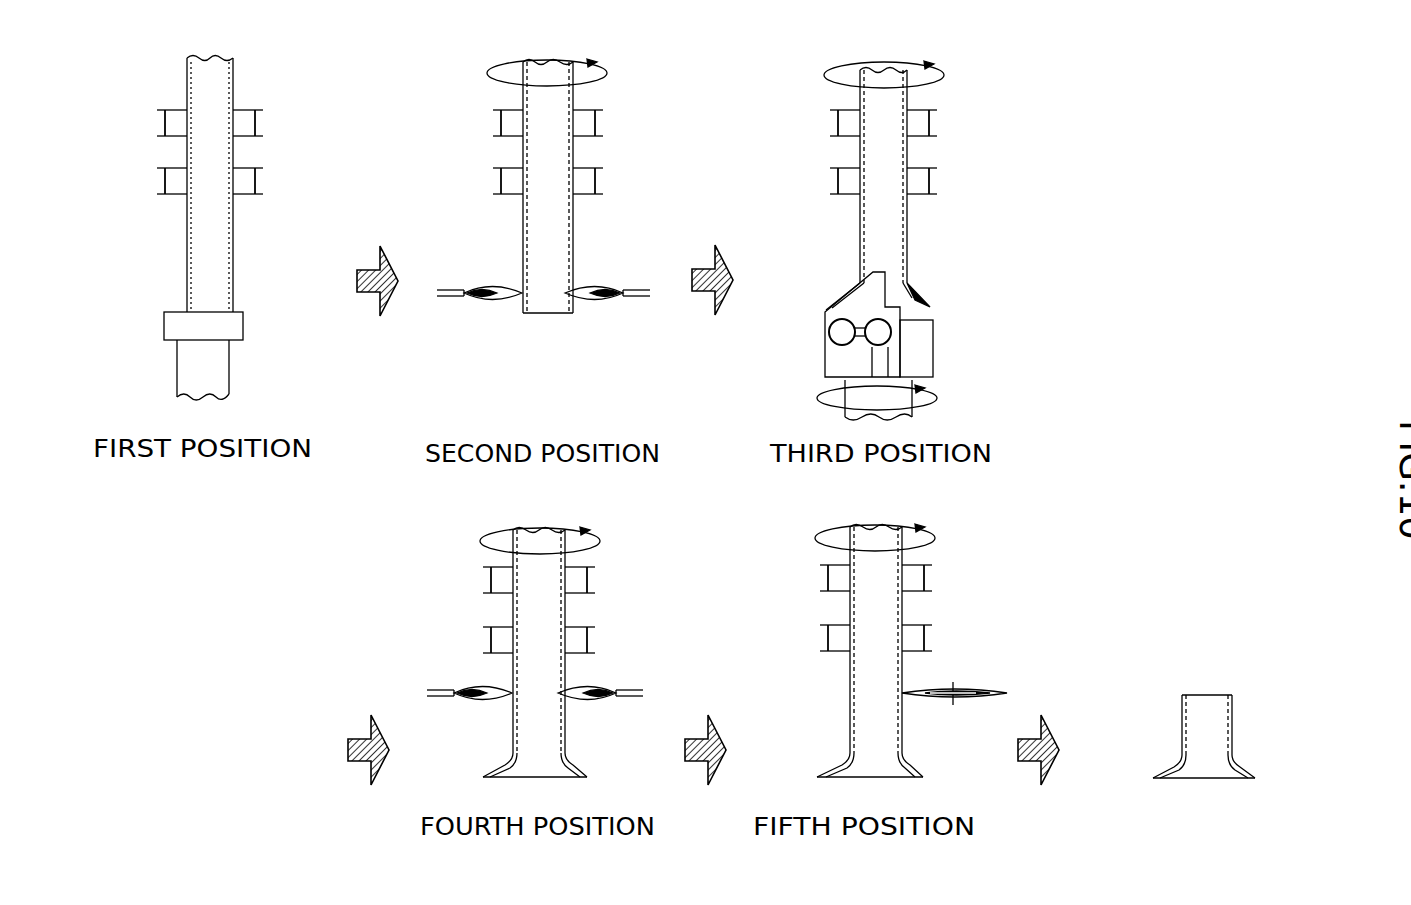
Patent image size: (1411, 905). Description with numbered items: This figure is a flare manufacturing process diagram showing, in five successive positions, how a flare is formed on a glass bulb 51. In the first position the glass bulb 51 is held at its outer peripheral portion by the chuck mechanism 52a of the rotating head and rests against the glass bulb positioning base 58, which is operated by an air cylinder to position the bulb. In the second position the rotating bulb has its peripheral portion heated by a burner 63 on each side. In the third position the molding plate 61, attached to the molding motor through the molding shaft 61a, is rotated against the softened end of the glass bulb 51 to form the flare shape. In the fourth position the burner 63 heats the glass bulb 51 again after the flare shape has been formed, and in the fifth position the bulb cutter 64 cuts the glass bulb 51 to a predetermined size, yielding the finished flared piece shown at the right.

The glass bulb 51 is at (530, 185).
The chuck mechanism 52a is at (243, 187).
The glass bulb positioning base 58 is at (225, 328).
The burner 63 is at (637, 290).
The molding plate 61 is at (891, 346).
The molding shaft 61a is at (925, 355).
The bulb cutter 64 is at (965, 690).